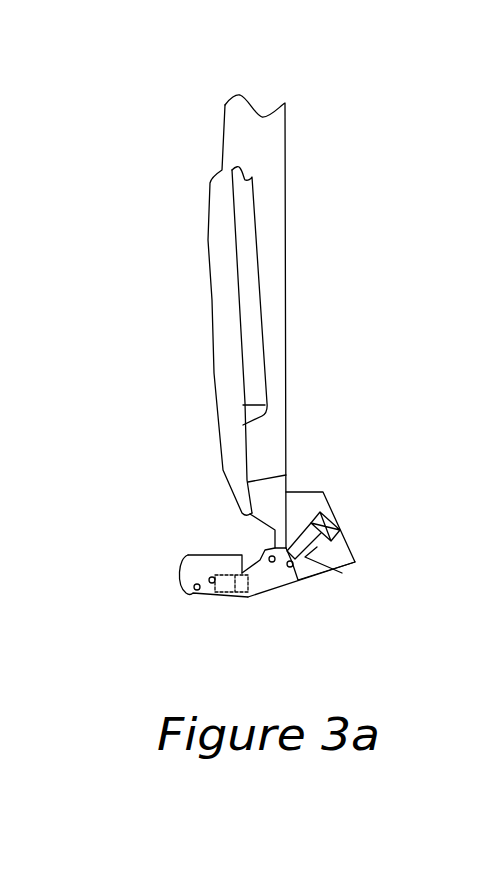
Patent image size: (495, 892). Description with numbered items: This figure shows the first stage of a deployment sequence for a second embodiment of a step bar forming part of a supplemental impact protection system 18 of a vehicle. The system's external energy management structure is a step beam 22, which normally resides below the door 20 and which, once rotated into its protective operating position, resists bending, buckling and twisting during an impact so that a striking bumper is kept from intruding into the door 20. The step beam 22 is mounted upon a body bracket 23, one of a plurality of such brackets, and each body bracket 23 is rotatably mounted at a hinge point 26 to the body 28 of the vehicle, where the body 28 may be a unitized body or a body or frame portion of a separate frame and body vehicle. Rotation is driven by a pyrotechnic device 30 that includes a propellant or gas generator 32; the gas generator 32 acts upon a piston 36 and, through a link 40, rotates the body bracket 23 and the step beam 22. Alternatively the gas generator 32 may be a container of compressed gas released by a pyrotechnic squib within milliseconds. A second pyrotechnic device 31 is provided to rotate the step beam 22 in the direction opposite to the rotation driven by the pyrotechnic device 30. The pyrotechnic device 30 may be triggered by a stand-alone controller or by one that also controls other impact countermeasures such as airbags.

The supplemental impact protection system 18 is at (220, 574).
The door 20 is at (273, 187).
The step beam 22 is at (190, 562).
The body bracket 23 is at (263, 593).
The hinge point 26 is at (267, 552).
The body 28 is at (307, 498).
The pyrotechnic device 30 is at (366, 541).
The second pyrotechnic device 31 is at (213, 570).
The gas generator 32 is at (340, 520).
The piston 36 is at (350, 567).
The link 40 is at (330, 565).